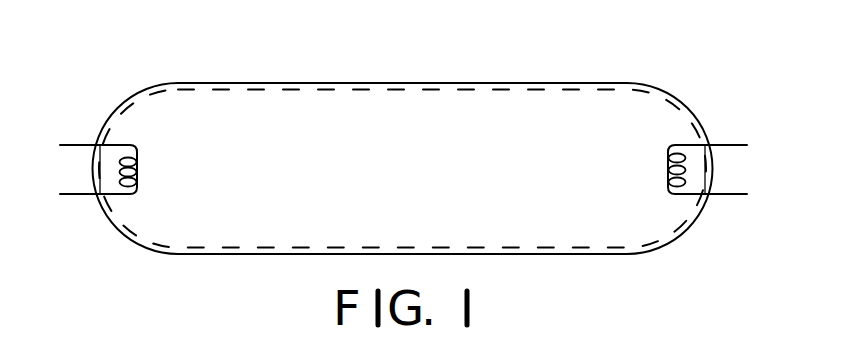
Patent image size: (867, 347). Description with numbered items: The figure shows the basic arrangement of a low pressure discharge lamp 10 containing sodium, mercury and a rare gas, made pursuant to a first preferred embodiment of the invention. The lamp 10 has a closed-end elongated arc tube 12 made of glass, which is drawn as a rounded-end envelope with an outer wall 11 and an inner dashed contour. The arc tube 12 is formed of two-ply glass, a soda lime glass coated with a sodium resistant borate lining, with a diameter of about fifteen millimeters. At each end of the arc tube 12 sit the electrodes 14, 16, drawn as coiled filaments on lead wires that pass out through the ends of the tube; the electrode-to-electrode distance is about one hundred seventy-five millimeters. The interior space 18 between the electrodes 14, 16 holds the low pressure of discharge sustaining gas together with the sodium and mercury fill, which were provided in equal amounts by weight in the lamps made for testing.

The lamp 10 is at (418, 153).
The glass envelope 11 is at (702, 118).
The arc tube 12 is at (535, 257).
The electrode 14 is at (668, 172).
The electrode 16 is at (137, 159).
The gas fill 18 is at (424, 132).